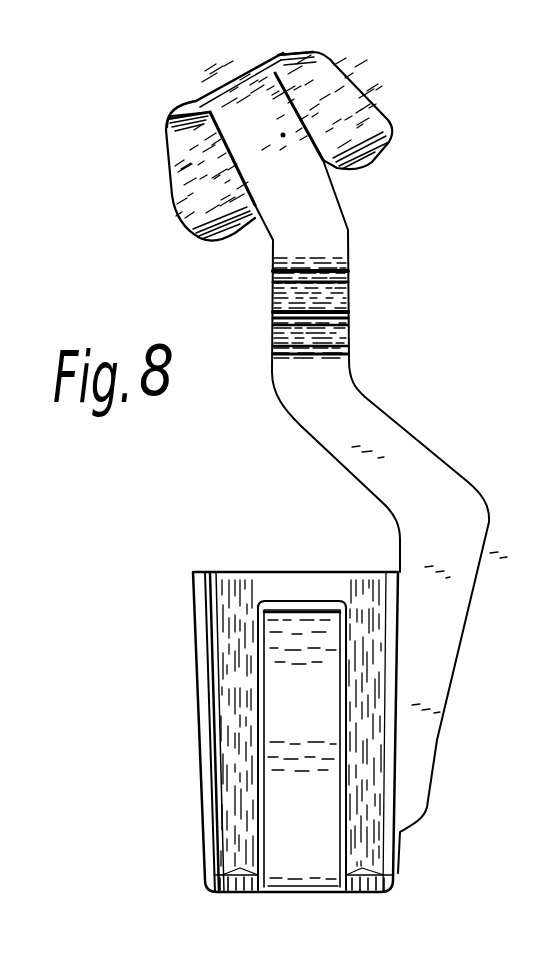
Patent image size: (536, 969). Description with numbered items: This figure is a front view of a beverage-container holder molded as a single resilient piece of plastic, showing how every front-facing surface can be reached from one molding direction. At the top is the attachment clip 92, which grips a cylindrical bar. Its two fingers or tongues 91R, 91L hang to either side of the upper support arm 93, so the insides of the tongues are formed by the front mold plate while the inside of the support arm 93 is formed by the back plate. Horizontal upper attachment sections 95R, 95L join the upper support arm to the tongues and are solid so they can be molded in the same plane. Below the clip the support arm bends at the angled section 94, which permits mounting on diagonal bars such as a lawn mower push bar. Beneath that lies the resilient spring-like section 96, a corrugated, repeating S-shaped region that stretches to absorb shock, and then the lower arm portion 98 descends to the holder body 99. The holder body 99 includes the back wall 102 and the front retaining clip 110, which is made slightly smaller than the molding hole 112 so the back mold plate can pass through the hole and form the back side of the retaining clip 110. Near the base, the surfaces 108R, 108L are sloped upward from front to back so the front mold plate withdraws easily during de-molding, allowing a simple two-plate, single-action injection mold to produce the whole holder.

The attachment clip 92 is at (208, 83).
The upper support arm 93 is at (284, 135).
The angled section 94 is at (350, 193).
The upper attachment section 95L is at (193, 104).
The upper attachment section 95R is at (283, 52).
The tongue 91L is at (174, 200).
The tongue 91R is at (385, 114).
The resilient spring-like section 96 is at (362, 258).
The lower arm portion 98 is at (438, 444).
The holder body 99 is at (165, 742).
The back wall 102 is at (260, 572).
The retaining clip 110 is at (263, 663).
The molding hole 112 is at (328, 600).
The surface 108L is at (243, 873).
The surface 108R is at (353, 873).